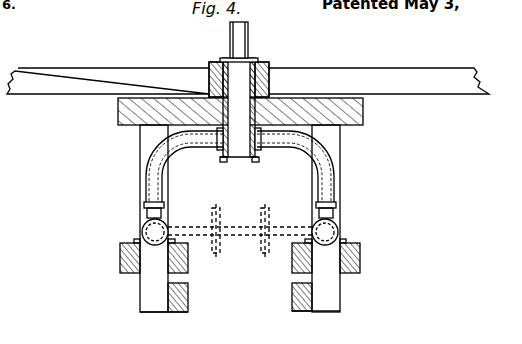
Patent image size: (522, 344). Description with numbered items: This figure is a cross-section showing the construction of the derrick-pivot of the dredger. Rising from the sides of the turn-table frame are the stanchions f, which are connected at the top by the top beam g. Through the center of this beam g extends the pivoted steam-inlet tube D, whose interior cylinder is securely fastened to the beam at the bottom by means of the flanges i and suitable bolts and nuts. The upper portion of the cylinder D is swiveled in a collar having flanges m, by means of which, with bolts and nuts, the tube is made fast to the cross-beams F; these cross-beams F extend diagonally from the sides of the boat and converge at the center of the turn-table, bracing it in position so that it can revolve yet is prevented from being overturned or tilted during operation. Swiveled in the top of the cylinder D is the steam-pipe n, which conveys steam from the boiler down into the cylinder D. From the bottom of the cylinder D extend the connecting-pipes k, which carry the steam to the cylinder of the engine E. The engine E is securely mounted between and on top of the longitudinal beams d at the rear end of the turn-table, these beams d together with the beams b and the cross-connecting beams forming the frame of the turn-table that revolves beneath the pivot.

The cross-beams F is at (248, 81).
The pivoted steam-inlet tube D is at (258, 52).
The flanges m is at (270, 63).
The flanges i is at (277, 93).
The steam-pipe n is at (245, 40).
The vertical tube j is at (239, 110).
The top beam g is at (240, 111).
The connecting-pipes k is at (163, 170).
The stanchions f is at (235, 218).
The engine E is at (240, 232).
The longitudinal beams d is at (120, 244).
The longitudinal beams b is at (178, 312).